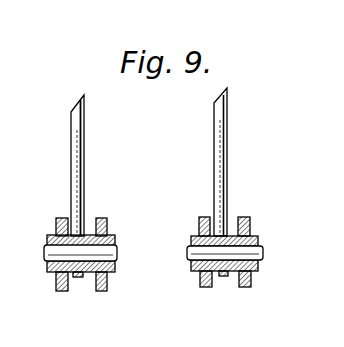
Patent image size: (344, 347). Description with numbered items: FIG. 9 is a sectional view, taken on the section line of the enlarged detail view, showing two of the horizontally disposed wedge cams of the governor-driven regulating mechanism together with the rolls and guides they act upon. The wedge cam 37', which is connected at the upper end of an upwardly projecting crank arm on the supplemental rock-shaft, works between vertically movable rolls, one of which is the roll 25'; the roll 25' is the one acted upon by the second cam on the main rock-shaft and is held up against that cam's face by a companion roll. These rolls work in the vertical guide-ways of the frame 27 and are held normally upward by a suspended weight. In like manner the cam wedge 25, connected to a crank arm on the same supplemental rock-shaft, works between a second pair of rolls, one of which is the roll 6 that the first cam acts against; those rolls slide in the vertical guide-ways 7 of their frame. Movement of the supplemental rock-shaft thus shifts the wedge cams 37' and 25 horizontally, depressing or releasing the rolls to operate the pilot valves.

The wedge cam 37' is at (102, 165).
The roll 25' is at (101, 244).
The frame 27 is at (100, 288).
The cam wedge 25 is at (243, 162).
The roll 6 is at (251, 233).
The vertical guide-ways 7 is at (244, 288).